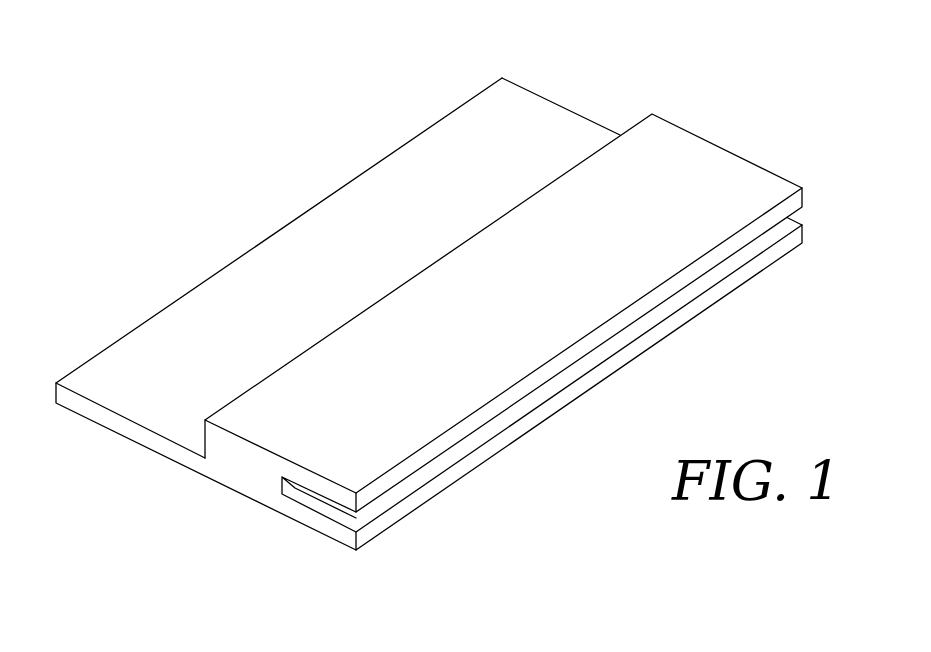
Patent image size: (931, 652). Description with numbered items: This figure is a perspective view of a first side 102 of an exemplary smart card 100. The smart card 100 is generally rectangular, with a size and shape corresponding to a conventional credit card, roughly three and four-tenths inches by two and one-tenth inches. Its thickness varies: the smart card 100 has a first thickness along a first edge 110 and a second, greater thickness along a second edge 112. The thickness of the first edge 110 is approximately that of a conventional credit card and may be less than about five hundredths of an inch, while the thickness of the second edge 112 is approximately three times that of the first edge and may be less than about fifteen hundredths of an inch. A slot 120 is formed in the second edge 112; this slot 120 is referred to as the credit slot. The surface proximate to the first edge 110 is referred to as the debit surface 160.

The smart card 100 is at (210, 150).
The first side 102 is at (515, 110).
The first edge 110 is at (368, 168).
The second edge 112 is at (765, 257).
The slot 120 is at (498, 421).
The debit surface 160 is at (177, 332).